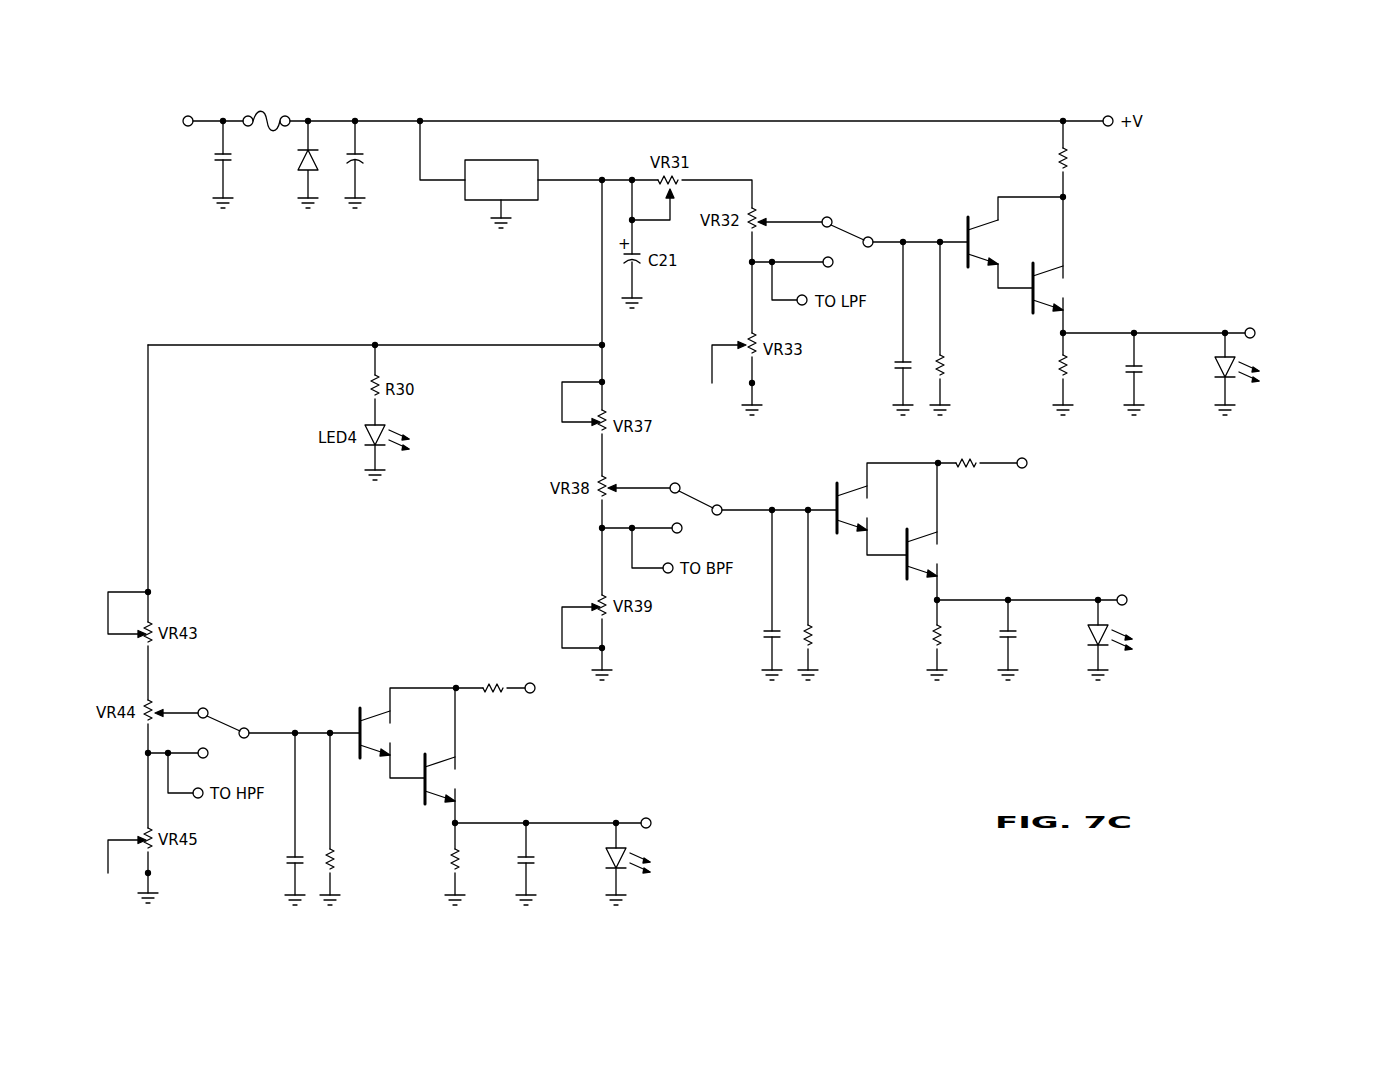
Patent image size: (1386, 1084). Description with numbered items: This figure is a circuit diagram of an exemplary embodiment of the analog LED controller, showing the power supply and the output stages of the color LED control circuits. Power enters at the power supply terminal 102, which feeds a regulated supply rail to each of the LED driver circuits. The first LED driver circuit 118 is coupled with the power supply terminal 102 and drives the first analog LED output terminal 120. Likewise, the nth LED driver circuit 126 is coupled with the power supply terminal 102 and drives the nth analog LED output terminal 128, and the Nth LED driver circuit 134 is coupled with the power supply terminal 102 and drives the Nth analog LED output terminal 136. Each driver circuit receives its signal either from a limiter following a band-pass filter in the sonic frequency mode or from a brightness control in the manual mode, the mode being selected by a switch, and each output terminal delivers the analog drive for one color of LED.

The power supply terminal 102 is at (142, 137).
The first LED driver circuit 118 is at (884, 201).
The first analog LED output terminal 120 is at (1314, 320).
The nth LED driver circuit 126 is at (752, 488).
The nth analog LED output terminal 128 is at (1190, 590).
The Nth LED driver circuit 134 is at (266, 678).
The Nth analog LED output terminal 136 is at (743, 810).